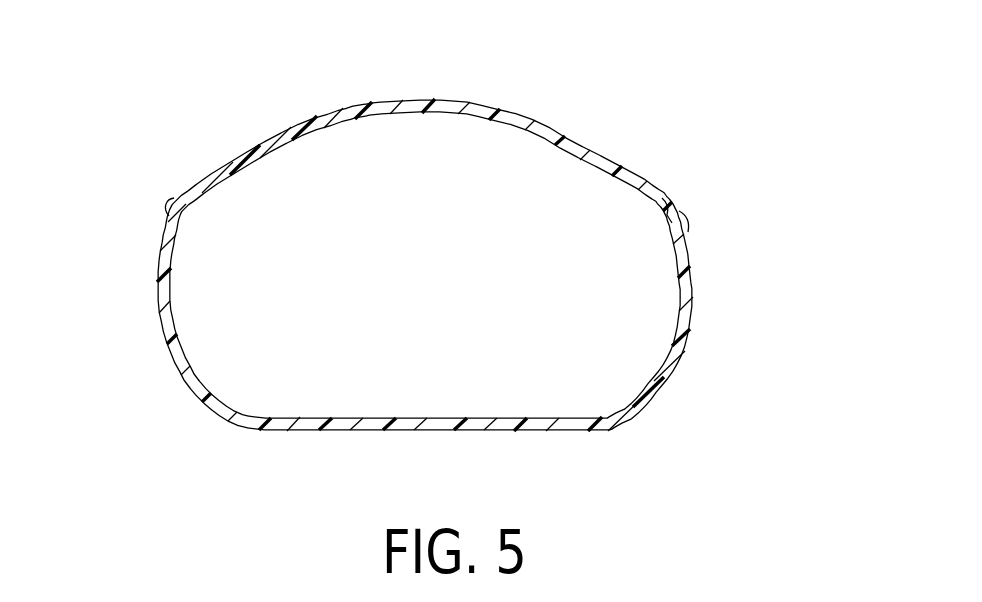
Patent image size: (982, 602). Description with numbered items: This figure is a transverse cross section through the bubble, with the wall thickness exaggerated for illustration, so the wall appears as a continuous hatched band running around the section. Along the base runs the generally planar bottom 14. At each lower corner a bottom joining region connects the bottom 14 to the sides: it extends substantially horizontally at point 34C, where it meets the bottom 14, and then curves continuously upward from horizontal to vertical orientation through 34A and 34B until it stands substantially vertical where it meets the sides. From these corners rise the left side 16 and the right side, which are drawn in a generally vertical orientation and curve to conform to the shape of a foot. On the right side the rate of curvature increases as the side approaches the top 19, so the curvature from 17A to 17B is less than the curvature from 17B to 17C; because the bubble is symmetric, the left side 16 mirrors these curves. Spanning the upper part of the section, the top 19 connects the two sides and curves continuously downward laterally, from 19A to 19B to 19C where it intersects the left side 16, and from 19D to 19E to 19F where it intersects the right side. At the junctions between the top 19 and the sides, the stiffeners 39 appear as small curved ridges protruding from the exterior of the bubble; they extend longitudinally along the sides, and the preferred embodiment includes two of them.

The bottom 14 is at (430, 461).
The left side 16 is at (127, 262).
The point on side 17A is at (734, 326).
The point on side 17B is at (745, 277).
The point on side 17C is at (713, 181).
The top portion 19 is at (422, 59).
The point on top 19A is at (337, 59).
The point on top 19B is at (312, 93).
The point on top 19C is at (246, 113).
The point on top 19D is at (549, 76).
The point on top 19E is at (626, 114).
The point on top 19F is at (688, 150).
The point on bottom joining region 34A is at (441, 362).
The point on bottom joining region 34B is at (417, 404).
The point on bottom joining region 34C is at (432, 441).
The stiffeners 39 is at (123, 186).